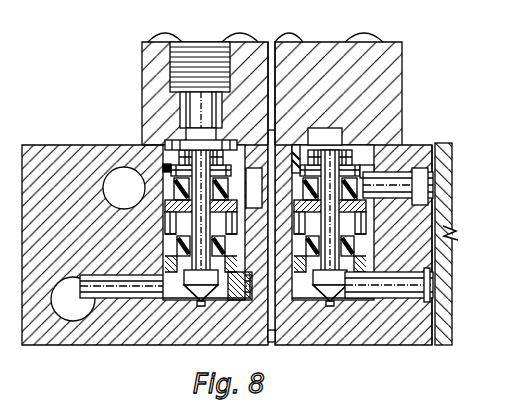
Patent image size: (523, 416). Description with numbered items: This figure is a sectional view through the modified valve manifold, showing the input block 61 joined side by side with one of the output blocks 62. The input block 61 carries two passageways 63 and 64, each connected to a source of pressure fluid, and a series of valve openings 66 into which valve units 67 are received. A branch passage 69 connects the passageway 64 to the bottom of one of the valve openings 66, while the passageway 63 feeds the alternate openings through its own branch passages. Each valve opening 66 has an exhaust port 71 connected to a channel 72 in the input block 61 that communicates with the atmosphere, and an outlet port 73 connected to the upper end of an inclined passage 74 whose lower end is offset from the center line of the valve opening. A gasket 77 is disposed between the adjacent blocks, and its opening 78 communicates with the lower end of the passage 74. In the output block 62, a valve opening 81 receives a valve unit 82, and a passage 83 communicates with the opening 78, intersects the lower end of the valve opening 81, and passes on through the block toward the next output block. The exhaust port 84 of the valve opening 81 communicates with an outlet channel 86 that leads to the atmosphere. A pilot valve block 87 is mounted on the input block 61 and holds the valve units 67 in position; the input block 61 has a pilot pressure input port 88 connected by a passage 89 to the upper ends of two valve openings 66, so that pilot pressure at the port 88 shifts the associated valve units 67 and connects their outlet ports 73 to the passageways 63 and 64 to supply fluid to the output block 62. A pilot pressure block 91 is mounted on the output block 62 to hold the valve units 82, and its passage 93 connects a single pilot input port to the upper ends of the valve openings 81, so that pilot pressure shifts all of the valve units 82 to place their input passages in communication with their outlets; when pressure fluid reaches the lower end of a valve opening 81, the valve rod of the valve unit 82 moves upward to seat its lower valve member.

The input block 61 is at (53, 126).
The output block 62 is at (446, 148).
The passageway 63 is at (116, 186).
The passageway 64 is at (60, 289).
The valve opening 66 is at (166, 166).
The valve unit 67 is at (163, 142).
The branch passage 69 is at (110, 285).
The exhaust port 71 is at (253, 180).
The channel 72 is at (264, 138).
The outlet port 73 is at (251, 278).
The passage 74 is at (258, 302).
The gasket 77 is at (272, 338).
The opening 78 is at (276, 288).
The valve opening 81 is at (362, 178).
The valve unit 82 is at (292, 143).
The passage 83 is at (312, 306).
The exhaust port 84 is at (400, 182).
The outlet channel 86 is at (420, 190).
The pilot valve block 87 is at (152, 51).
The pilot pressure input port 88 is at (188, 43).
The passage 89 is at (183, 125).
The pilot pressure block 91 is at (312, 46).
The passage 93 is at (330, 126).